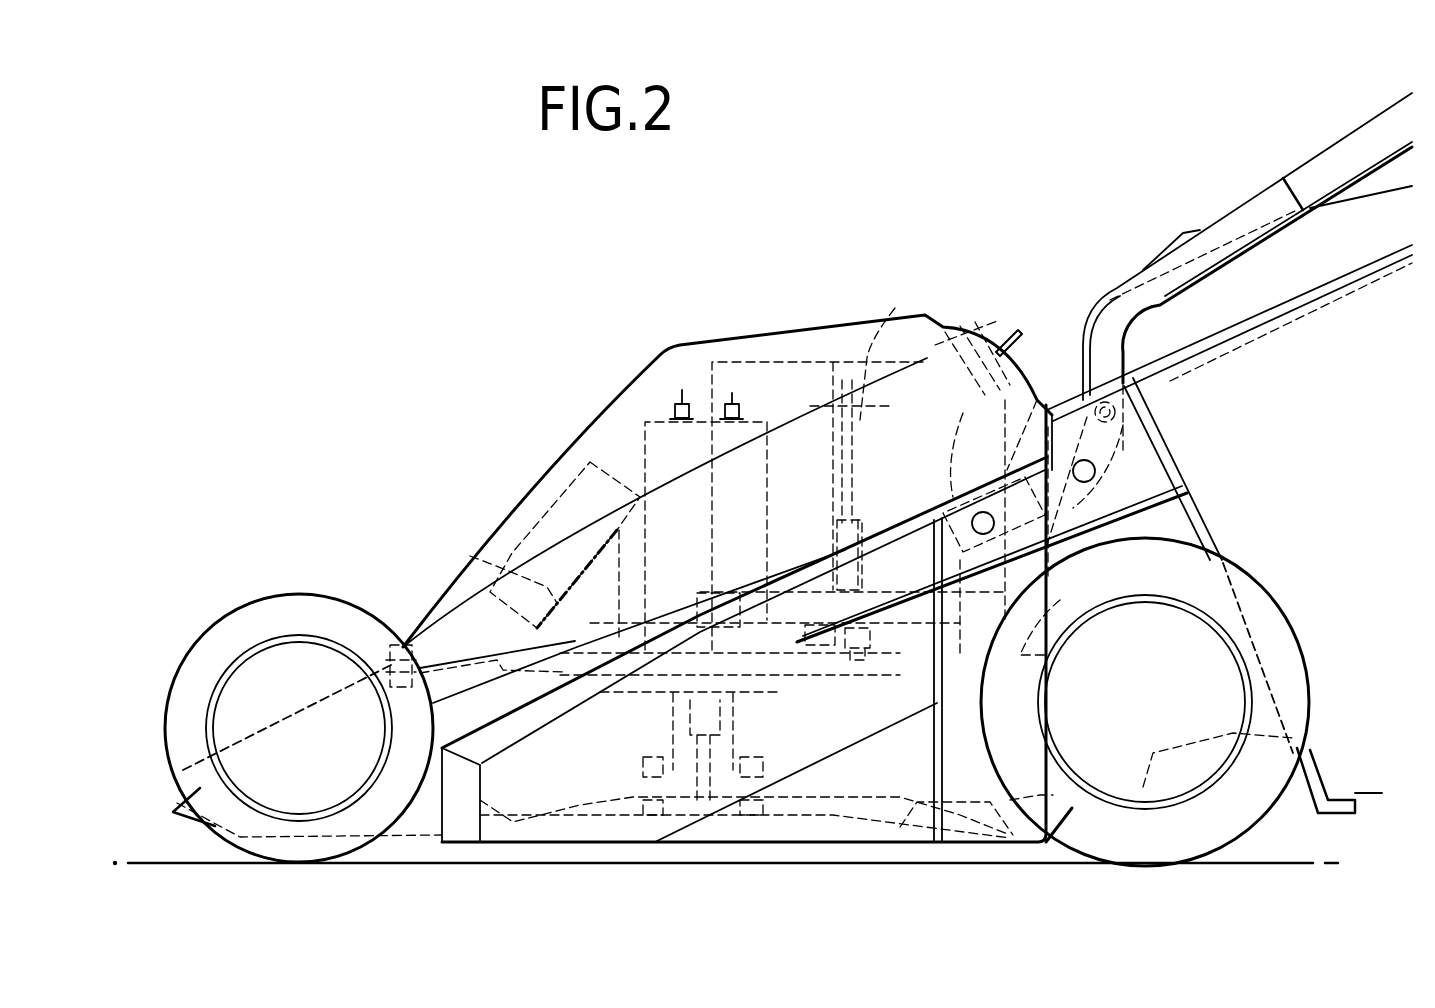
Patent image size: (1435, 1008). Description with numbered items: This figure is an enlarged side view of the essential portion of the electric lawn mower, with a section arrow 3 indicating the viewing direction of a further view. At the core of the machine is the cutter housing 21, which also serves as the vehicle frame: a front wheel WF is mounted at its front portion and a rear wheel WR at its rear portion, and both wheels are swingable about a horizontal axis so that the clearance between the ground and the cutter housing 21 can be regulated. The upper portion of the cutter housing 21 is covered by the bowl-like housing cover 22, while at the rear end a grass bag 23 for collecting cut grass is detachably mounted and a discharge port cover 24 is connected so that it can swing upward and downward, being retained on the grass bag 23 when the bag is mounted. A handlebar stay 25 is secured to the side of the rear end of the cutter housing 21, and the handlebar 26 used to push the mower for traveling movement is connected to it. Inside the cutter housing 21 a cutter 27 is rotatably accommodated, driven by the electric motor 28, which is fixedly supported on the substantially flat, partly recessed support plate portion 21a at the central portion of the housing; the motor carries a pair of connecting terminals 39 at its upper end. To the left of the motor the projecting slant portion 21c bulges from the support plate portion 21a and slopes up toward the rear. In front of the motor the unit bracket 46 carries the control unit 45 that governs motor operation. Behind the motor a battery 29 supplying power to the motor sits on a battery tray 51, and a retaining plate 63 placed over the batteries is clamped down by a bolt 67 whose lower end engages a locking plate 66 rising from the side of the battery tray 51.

The section line / view direction arrow of FIG. 3 is at (855, 195).
The cutter housing 21 is at (903, 790).
The support plate portion 21a is at (1060, 600).
The projecting slant portion 21c is at (805, 565).
The housing cover 22 is at (647, 397).
The grass bag 23 is at (1382, 467).
The discharge port cover 24 is at (1285, 255).
The handlebar stay 25 is at (1140, 298).
The handlebar 26 is at (1343, 153).
The cutter 27 is at (583, 813).
The electric motor 28 is at (645, 448).
The battery 29 is at (783, 360).
The connecting terminal 39 is at (720, 360).
The control unit 45 is at (550, 508).
The unit bracket 46 is at (480, 557).
The battery tray 51 is at (733, 593).
The retaining plate 63 is at (895, 308).
The locking plate 66 is at (992, 527).
The bolt 67 is at (855, 463).
The front wheel WF is at (280, 620).
The rear wheel WR is at (1278, 642).